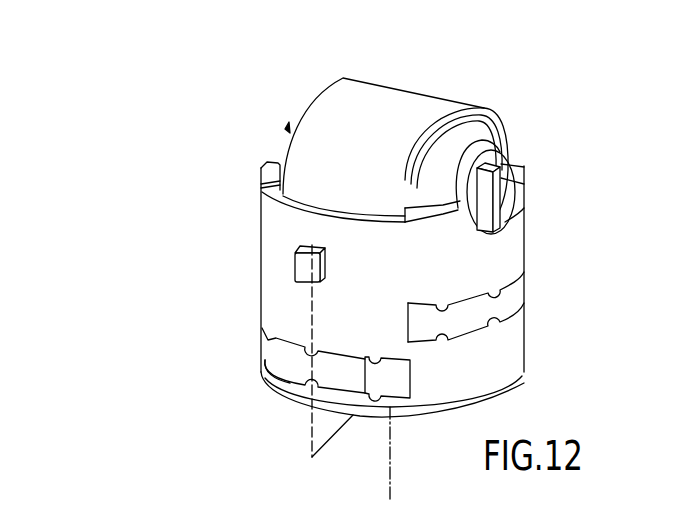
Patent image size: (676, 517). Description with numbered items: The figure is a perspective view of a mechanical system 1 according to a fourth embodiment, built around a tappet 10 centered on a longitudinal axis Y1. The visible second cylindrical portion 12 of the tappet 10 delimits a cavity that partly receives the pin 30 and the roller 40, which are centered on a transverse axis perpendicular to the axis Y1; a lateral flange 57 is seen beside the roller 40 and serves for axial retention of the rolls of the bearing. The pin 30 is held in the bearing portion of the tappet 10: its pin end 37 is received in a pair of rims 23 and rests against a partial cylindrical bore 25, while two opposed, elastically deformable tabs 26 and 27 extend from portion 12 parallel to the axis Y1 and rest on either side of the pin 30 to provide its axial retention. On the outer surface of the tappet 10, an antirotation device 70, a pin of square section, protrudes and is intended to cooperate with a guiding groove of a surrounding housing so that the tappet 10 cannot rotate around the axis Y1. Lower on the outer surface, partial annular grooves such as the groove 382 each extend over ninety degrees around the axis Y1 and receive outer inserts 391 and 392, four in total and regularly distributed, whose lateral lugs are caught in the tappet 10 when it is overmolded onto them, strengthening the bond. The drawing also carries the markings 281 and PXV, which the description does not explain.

The mechanical system 1 is at (600, 121).
The tappet 10 is at (526, 387).
The second cylindrical portion 12 is at (265, 207).
The rims 23 is at (525, 173).
The partial cylindrical bore 25 is at (508, 200).
The tab 26 is at (288, 126).
The tab 27 is at (490, 206).
The pin 30 is at (462, 157).
The pin end 37 is at (478, 138).
The roller 40 is at (360, 103).
The lateral flange 57 is at (470, 132).
The antirotation device 70 is at (310, 268).
The slot end 281 is at (267, 372).
The groove 382 is at (476, 304).
The insert 391 is at (303, 368).
The insert 392 is at (262, 290).
The section plane PXV is at (318, 440).
The longitudinal axis Y1 is at (391, 462).